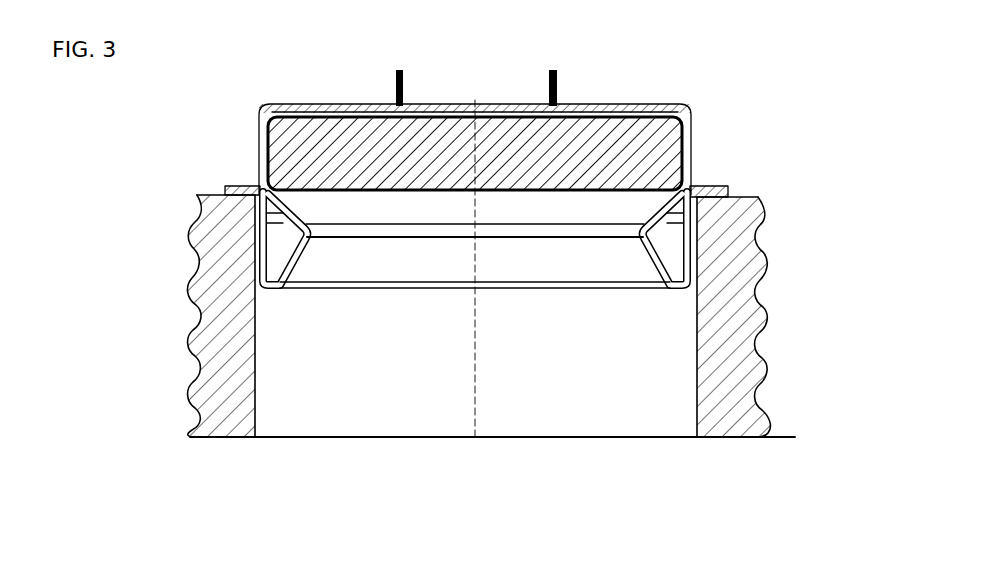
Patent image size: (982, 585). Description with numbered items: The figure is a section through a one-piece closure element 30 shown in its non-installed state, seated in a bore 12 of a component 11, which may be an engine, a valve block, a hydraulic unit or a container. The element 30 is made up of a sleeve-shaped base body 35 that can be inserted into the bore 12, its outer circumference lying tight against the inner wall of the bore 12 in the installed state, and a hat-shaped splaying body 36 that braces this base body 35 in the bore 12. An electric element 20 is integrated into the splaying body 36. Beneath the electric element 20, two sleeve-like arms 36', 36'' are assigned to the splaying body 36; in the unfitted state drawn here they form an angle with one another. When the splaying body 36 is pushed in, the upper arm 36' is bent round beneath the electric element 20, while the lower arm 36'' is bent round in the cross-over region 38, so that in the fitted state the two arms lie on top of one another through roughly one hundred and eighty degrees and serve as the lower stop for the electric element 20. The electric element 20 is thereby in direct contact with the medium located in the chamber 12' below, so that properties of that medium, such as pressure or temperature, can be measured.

The component 11 is at (740, 208).
The bore 12 is at (492, 473).
The chamber 12' is at (525, 317).
The electric element 20 is at (665, 133).
The element 30 is at (442, 101).
The base body 35 is at (703, 250).
The splaying body 36 is at (475, 102).
The upper arm 36' is at (411, 205).
The lower arm 36'' is at (201, 255).
The cross-over region 38 is at (704, 289).